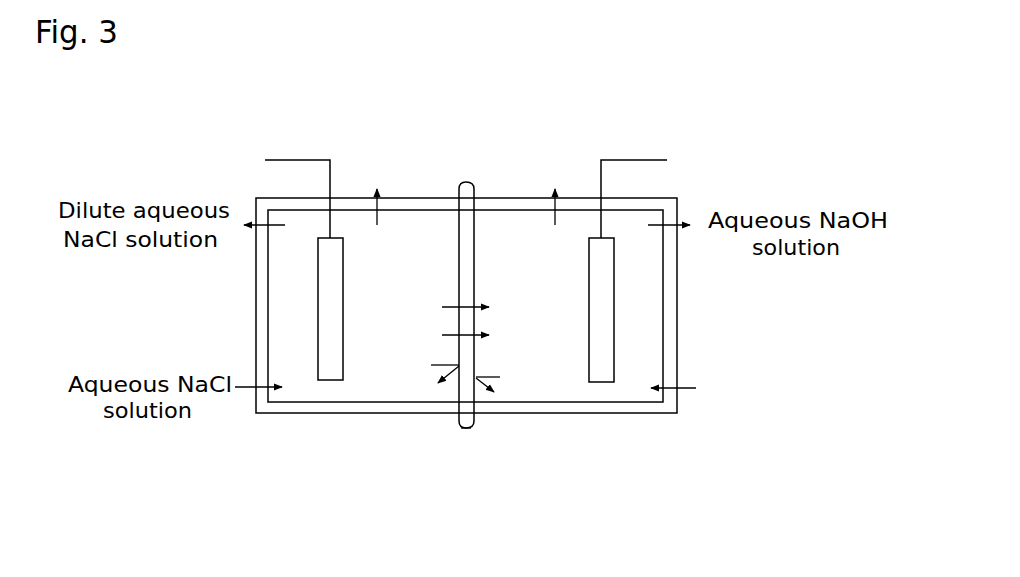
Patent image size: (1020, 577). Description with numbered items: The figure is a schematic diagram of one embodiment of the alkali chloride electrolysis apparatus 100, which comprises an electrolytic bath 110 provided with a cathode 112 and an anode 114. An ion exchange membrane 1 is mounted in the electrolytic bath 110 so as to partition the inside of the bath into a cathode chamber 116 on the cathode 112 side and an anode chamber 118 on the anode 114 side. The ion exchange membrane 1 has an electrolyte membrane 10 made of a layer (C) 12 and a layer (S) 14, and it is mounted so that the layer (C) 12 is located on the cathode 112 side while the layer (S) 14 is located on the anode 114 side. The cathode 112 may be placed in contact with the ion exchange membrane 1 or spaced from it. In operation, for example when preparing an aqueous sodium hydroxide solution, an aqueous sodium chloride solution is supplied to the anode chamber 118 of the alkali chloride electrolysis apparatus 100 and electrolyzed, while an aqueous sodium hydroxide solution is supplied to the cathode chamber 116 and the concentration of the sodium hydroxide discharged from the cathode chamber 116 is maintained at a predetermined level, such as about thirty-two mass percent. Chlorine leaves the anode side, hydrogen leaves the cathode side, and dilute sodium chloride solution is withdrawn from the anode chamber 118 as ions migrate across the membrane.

The alkali chloride electrolysis apparatus 100 is at (411, 139).
The electrolytic bath 110 is at (318, 414).
The cathode 112 is at (615, 293).
The anode 114 is at (318, 300).
The cathode chamber 116 is at (568, 392).
The anode chamber 118 is at (391, 392).
The electrolyte membrane 10 is at (464, 177).
The layer (C) 12 is at (474, 270).
The layer (S) 14 is at (459, 240).
The ion exchange membrane 1 is at (466, 434).